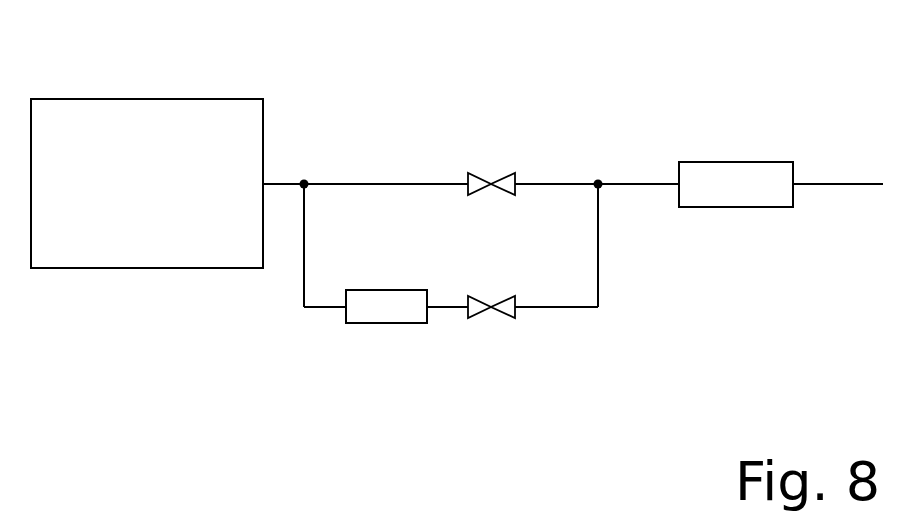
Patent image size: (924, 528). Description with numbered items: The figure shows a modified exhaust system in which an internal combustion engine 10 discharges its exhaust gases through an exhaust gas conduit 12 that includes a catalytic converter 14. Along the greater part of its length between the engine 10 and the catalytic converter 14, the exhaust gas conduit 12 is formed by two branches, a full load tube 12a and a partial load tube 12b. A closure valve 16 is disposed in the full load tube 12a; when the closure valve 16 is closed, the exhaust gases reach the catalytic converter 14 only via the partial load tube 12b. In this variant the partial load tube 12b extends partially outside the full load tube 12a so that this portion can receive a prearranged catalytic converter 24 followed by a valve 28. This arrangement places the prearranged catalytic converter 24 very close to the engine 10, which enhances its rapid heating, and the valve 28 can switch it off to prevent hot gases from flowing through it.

The internal combustion engine 10 is at (188, 99).
The exhaust gas conduit 12 is at (340, 175).
The full load tube 12a is at (573, 180).
The partial load tube 12b is at (580, 307).
The catalytic converter 14 is at (743, 207).
The closure valve 16 is at (485, 180).
The prearranged catalytic converter 24 is at (405, 323).
The valve 28 is at (487, 312).